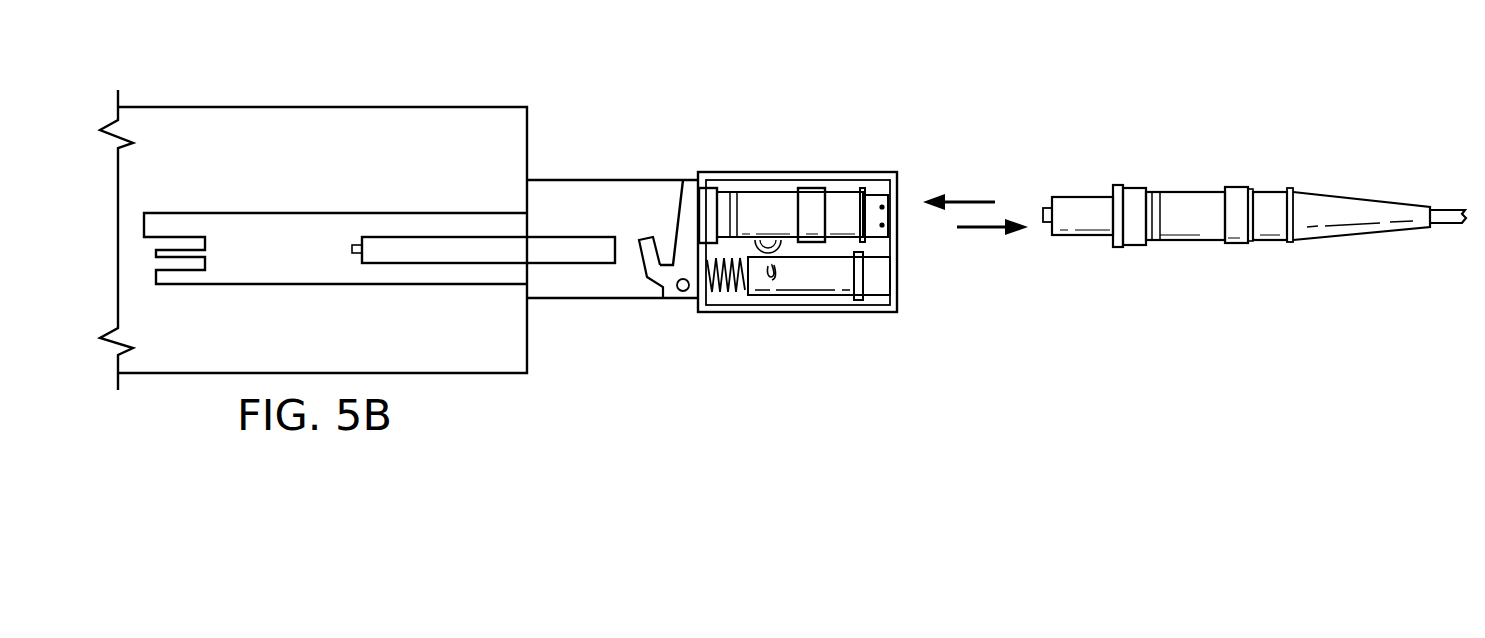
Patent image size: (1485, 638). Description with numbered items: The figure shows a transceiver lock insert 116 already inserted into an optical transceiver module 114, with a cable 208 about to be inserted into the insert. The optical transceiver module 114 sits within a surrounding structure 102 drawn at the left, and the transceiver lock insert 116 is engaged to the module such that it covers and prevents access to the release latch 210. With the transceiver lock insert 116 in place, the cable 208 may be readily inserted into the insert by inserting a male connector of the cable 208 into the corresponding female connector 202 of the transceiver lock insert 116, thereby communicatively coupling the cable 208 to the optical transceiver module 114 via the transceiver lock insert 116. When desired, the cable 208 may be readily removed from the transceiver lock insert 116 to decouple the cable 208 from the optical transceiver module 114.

The handpiece housing 102 is at (322, 107).
The optical transceiver module 114 is at (350, 213).
The transceiver lock insert 116 is at (840, 172).
The female connector 202 is at (897, 230).
The cable 208 is at (1183, 192).
The release latch 210 is at (682, 300).